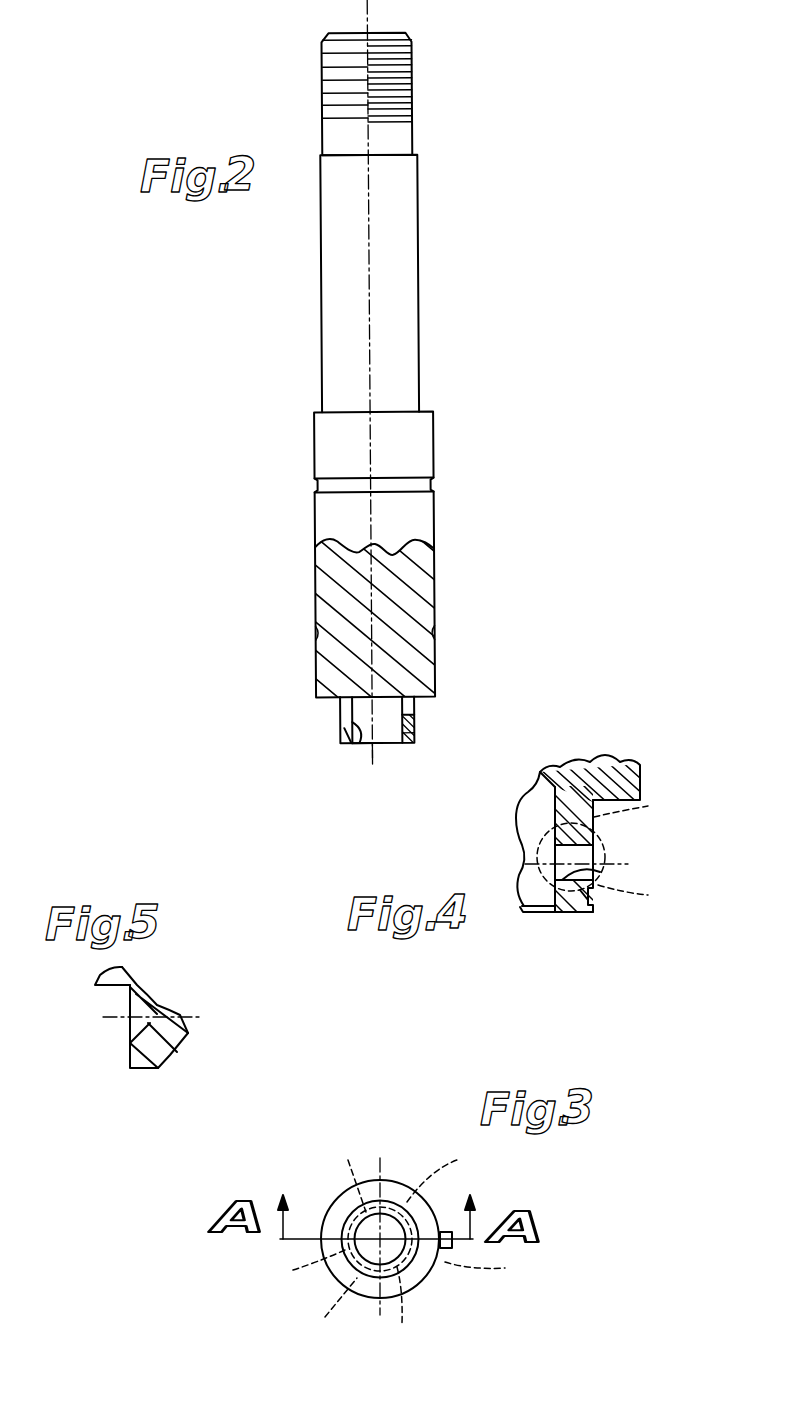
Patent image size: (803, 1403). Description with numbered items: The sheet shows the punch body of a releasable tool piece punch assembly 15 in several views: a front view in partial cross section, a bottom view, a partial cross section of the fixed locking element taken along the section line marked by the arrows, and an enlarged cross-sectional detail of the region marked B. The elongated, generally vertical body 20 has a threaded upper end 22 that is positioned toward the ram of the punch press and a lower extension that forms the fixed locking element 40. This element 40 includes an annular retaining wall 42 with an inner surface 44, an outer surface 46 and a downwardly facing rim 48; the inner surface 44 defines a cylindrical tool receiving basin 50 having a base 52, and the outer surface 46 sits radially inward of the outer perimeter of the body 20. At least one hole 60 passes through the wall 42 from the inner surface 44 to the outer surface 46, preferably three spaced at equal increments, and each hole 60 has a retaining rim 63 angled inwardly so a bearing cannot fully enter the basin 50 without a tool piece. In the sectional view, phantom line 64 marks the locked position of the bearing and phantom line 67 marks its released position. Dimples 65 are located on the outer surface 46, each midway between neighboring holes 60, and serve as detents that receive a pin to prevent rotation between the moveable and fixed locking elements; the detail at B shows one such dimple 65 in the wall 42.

In FIG. 2, the punch assembly 15 is at (264, 311).
In FIG. 2, the body 20 is at (426, 300).
In FIG. 2, the upper end 22 is at (374, 40).
In FIG. 2, the fixed locking element 40 is at (424, 750).
In FIG. 2, the annular retaining wall 42 is at (344, 740).
In FIG. 4, the annular retaining wall 42 is at (585, 893).
In FIG. 5, the annular retaining wall 42 is at (158, 1052).
In FIG. 2, the inner surface 44 is at (357, 746).
In FIG. 2, the outer surface 46 is at (340, 722).
In FIG. 5, the outer surface 46 is at (135, 1048).
In FIG. 2, the downwardly facing rim 48 is at (371, 752).
In FIG. 4, the downwardly facing rim 48 is at (560, 912).
In FIG. 3, the downwardly facing rim 48 is at (361, 1232).
In FIG. 2, the tool receiving basin 50 is at (389, 701).
In FIG. 4, the tool receiving basin 50 is at (545, 895).
In FIG. 3, the tool receiving basin 50 is at (385, 1220).
In FIG. 2, the base 52 is at (356, 701).
In FIG. 4, the base 52 is at (537, 818).
In FIG. 2, the hole 60 is at (414, 720).
In FIG. 4, the hole 60 is at (580, 856).
In FIG. 3, the hole 60 is at (409, 1241).
In FIG. 4, the retaining rim 63 is at (600, 872).
In FIG. 4, the phantom line (locked position) 64 is at (638, 806).
In FIG. 2, the dimple 65 is at (338, 708).
In FIG. 5, the dimple 65 is at (130, 1025).
In FIG. 3, the dimple 65 is at (369, 1253).
In FIG. 4, the phantom line (released position) 67 is at (641, 905).
In FIG. 2, the detail B is at (318, 723).